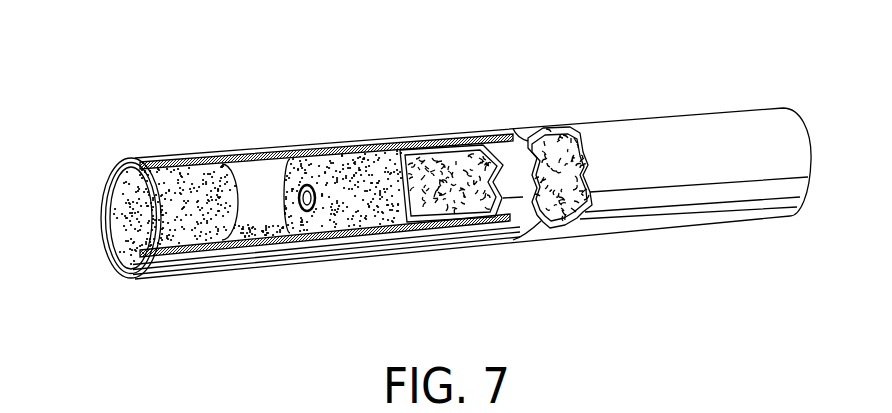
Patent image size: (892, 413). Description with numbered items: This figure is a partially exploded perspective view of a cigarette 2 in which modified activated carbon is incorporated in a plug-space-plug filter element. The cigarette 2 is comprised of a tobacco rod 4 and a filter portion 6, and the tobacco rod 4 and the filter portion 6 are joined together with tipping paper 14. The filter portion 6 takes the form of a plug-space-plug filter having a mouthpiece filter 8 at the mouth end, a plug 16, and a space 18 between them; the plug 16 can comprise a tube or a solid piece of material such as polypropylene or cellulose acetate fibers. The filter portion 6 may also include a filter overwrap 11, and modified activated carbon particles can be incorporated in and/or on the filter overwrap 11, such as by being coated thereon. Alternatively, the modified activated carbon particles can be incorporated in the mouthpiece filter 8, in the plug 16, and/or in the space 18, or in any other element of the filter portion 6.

The cigarette 2 is at (332, 121).
The tobacco rod 4 is at (678, 124).
The filter portion 6 is at (209, 148).
The mouthpiece filter 8 is at (104, 170).
The filter overwrap 11 is at (121, 270).
The tipping paper 14 is at (427, 140).
The plug 16 is at (373, 220).
The space 18 is at (255, 213).